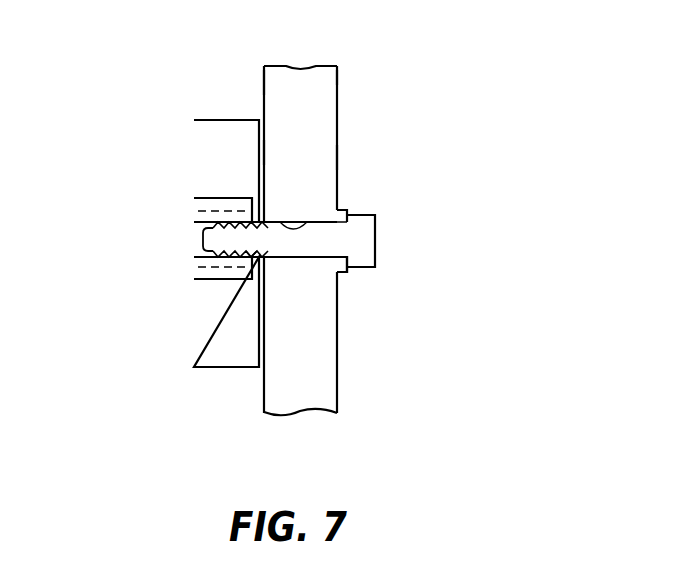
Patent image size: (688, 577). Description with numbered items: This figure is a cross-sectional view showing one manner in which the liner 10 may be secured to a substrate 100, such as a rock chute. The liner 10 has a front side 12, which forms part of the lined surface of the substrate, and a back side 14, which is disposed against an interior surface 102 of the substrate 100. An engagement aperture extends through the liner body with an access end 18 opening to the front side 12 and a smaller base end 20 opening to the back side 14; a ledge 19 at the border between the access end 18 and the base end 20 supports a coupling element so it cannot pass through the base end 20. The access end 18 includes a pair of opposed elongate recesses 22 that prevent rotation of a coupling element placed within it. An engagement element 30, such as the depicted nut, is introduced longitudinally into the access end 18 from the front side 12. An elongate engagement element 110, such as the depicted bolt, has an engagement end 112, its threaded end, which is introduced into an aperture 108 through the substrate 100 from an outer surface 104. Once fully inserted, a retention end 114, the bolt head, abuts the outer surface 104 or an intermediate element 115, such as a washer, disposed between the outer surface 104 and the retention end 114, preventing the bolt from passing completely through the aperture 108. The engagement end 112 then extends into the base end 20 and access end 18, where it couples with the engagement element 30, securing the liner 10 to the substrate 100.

The liner 10 is at (177, 95).
The front side 12 is at (337, 77).
The back side 14 is at (267, 153).
The access end 18 is at (208, 207).
The ledge 19 is at (250, 260).
The base end 20 is at (265, 257).
The elongate recesses 22 is at (223, 195).
The engagement element 30 is at (205, 277).
The substrate 100 is at (288, 97).
The interior surface 102 is at (262, 82).
The outer surface 104 is at (337, 158).
The aperture 108 is at (313, 222).
The elongate engagement element 110 is at (380, 233).
The engagement end 112 is at (218, 237).
The retention end 114 is at (363, 243).
The intermediate element 115 is at (342, 272).